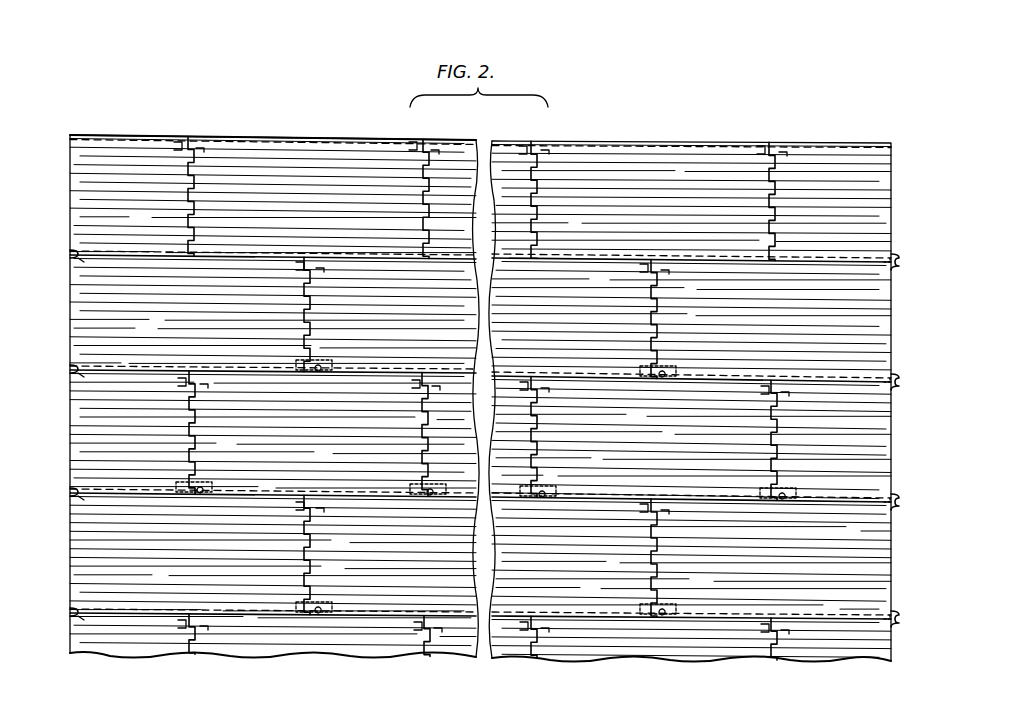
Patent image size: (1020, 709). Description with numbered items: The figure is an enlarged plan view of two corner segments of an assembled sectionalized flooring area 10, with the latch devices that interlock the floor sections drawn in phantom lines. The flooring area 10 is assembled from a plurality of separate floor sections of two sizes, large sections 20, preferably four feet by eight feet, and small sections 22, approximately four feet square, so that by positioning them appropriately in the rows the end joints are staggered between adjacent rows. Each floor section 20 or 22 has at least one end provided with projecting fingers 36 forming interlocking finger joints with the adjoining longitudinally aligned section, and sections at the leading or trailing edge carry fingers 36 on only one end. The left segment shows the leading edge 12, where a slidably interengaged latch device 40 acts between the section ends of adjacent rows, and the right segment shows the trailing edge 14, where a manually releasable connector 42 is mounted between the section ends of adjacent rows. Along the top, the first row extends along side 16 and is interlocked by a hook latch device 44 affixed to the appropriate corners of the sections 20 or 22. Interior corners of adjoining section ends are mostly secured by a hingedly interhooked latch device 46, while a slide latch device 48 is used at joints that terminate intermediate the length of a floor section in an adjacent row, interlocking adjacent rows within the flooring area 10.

The sectionalized flooring area 10 is at (660, 118).
The leading edge 12 is at (70, 140).
The trailing edge 14 is at (891, 141).
The side 16 is at (308, 138).
The large sections 20 is at (258, 162).
The small sections 22 is at (128, 152).
The projecting fingers 36 is at (312, 343).
The slidably interengaged latch device 40 is at (55, 490).
The manually releasable connector 42 is at (898, 370).
The hook latch device 44 is at (190, 122).
The hingedly interhooked latch device 46 is at (543, 476).
The slide latch device 48 is at (332, 242).